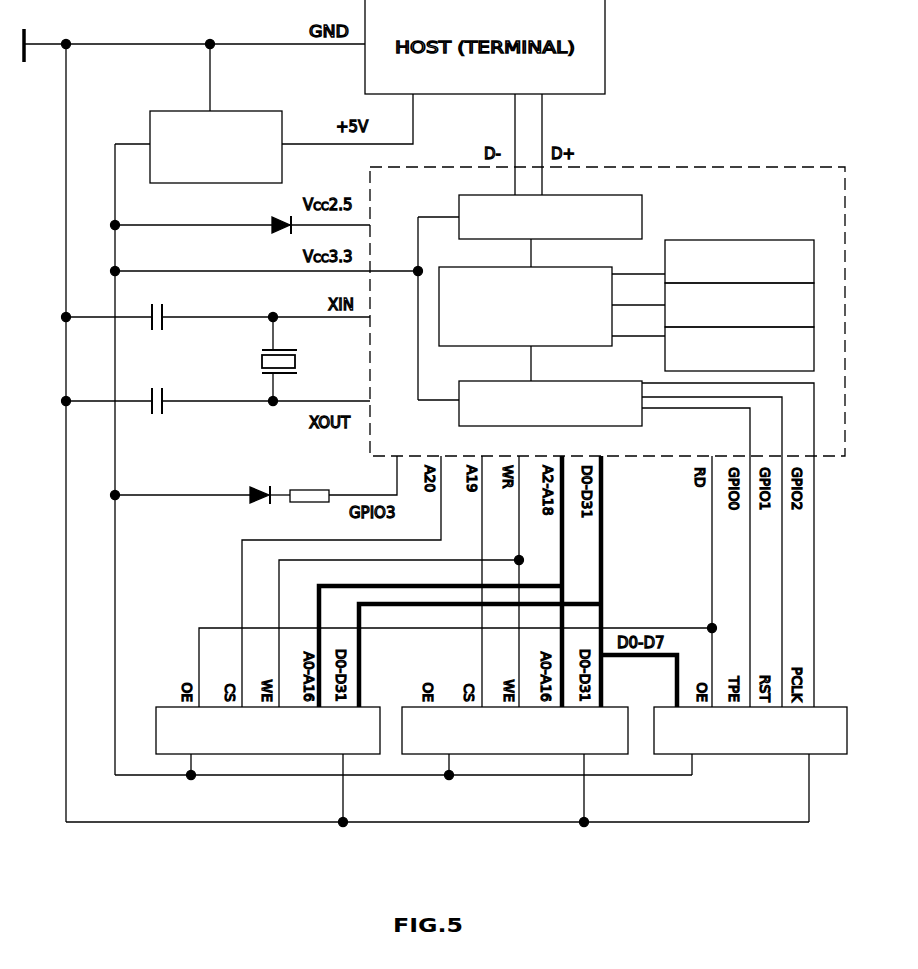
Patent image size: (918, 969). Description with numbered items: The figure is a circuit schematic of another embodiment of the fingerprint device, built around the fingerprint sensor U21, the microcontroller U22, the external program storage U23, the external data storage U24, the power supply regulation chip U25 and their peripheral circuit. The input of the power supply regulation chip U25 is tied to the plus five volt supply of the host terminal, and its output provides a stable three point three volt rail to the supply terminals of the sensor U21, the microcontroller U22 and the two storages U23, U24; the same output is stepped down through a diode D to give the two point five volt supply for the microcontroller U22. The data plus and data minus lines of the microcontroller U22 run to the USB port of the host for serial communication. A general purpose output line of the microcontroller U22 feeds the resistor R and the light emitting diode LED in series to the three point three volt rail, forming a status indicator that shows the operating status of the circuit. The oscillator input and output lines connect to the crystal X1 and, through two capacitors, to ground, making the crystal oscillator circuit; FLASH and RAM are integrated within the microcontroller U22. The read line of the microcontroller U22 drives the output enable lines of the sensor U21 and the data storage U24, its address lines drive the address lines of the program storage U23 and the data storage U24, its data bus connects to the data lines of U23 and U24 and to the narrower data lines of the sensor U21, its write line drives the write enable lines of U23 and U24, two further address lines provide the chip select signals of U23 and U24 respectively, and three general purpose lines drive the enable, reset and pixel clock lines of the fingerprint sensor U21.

The fingerprint sensor U21 is at (750, 730).
The microcontroller U22 is at (607, 311).
The external program storage U23 is at (515, 730).
The external data storage U24 is at (268, 730).
The power supply regulation chip U25 is at (216, 147).
The crystal X1 is at (298, 359).
The diode D is at (272, 233).
The light emitting diode LED is at (257, 481).
The resistor R is at (309, 480).